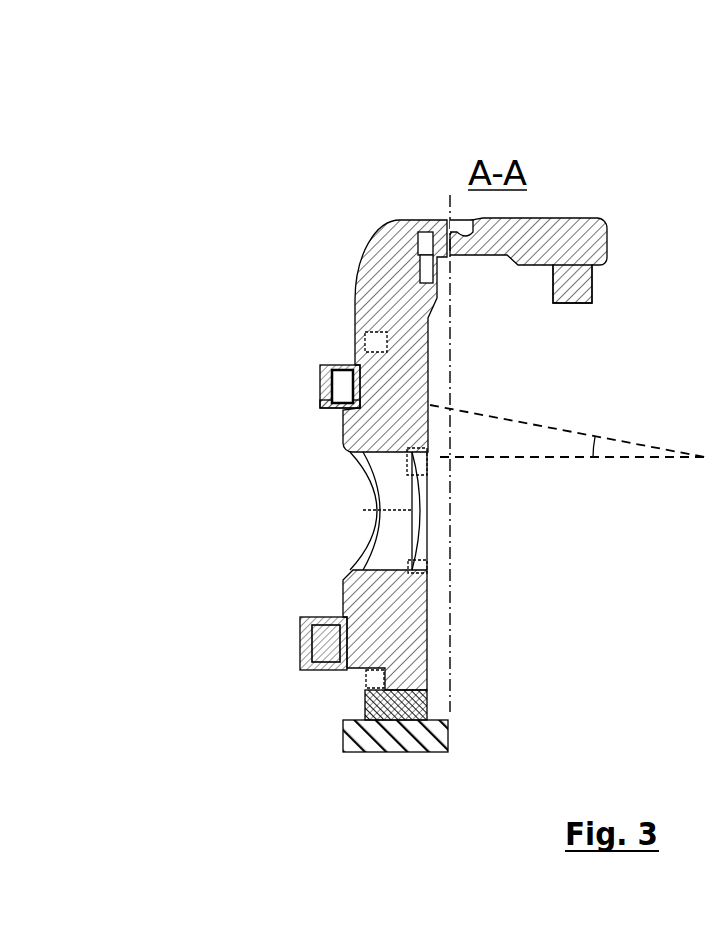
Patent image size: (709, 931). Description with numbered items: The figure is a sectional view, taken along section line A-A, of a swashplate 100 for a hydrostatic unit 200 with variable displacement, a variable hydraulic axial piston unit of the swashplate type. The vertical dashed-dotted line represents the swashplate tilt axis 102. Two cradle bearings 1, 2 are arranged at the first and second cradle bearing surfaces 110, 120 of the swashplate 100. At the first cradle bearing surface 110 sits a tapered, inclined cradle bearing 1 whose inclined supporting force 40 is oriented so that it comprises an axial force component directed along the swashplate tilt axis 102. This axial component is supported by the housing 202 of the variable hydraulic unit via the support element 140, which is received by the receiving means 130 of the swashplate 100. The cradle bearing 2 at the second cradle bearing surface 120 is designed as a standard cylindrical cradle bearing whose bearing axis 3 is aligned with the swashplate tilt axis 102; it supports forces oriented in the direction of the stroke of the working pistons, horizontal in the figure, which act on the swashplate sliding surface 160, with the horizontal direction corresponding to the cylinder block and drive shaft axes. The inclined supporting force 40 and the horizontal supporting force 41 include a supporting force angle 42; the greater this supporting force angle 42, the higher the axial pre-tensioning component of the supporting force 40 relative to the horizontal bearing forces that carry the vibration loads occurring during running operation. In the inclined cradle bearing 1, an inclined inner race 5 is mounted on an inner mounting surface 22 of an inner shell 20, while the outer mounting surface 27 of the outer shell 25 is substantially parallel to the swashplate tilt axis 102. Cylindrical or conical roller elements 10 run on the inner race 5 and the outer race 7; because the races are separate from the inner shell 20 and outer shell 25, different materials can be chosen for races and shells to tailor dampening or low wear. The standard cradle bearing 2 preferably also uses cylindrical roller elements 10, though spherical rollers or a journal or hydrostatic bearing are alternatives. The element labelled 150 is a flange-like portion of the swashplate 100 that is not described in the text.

The cradle bearing 1 is at (276, 318).
The cradle bearing 2 is at (278, 658).
The bearing axis 3 is at (398, 392).
The swashplate tilt axis 102 is at (448, 205).
The inner race 5 is at (287, 290).
The inner mounting surface 22 is at (287, 290).
The outer race 7 is at (287, 290).
The outer mounting surface 27 is at (340, 362).
The roller elements 10 is at (322, 394).
The inner shell 20 is at (357, 360).
The outer shell 25 is at (325, 410).
The inclined supporting force 40 is at (512, 420).
The horizontal supporting force 41 is at (530, 460).
The supporting force angle 42 is at (607, 452).
The swashplate 100 is at (578, 222).
The first cradle bearing surface 110 is at (428, 362).
The second cradle bearing surface 120 is at (342, 620).
The receiving means 130 is at (417, 675).
The support element 140 is at (370, 798).
The flange foot 150 is at (593, 305).
The swashplate sliding surface 160 is at (428, 637).
The hydrostatic unit 200 is at (243, 518).
The housing 202 is at (400, 752).